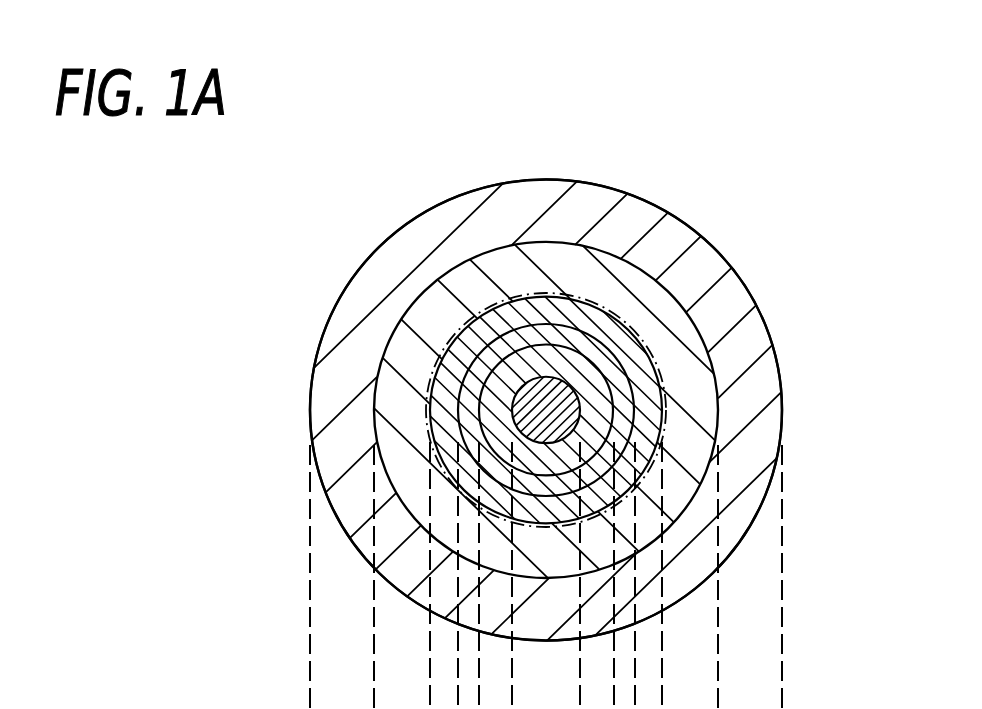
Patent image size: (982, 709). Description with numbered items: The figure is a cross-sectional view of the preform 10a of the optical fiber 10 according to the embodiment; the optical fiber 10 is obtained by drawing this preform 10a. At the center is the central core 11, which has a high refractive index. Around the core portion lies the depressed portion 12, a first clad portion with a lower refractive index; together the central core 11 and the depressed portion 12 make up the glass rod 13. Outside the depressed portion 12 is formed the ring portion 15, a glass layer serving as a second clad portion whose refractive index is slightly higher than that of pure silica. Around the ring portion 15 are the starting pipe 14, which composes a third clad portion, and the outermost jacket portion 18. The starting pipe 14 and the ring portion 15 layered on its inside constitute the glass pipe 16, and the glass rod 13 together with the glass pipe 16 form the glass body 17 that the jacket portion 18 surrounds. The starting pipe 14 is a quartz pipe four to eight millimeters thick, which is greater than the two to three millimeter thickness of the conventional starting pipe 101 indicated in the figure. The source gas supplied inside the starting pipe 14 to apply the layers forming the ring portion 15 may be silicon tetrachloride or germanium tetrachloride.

The optical fiber 10 is at (601, 423).
The preform 10a is at (755, 228).
The central core 11 is at (540, 350).
The depressed portion 12 is at (587, 330).
The glass rod 13 is at (685, 127).
The starting pipe 14 is at (467, 290).
The ring portion 15 is at (530, 340).
The glass pipe 16 is at (492, 127).
The glass body 17 is at (655, 70).
The jacket portion 18 is at (762, 393).
The conventional starting pipe 101 is at (466, 328).